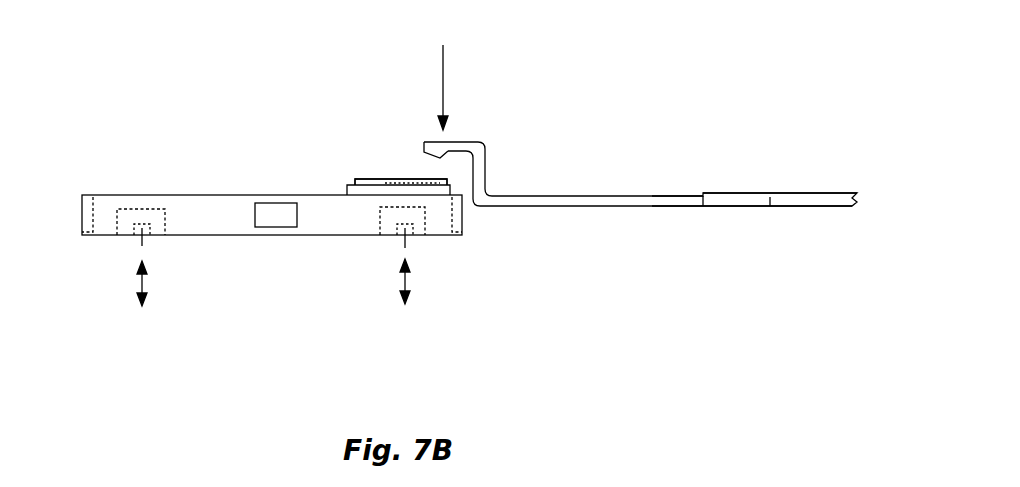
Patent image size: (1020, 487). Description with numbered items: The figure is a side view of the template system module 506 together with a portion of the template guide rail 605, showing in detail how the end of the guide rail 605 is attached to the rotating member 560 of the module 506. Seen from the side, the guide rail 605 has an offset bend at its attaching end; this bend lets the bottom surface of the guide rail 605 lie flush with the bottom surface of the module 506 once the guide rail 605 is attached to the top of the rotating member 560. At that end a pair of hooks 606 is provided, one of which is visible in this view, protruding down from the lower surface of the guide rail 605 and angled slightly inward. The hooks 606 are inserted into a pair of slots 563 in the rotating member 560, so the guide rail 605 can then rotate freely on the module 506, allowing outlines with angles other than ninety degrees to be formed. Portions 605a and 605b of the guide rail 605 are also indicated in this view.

The template system module 506 is at (185, 157).
The rotating member 560 is at (347, 190).
The slots 563 is at (428, 178).
The hooks 606 is at (468, 143).
The template guide rail 605 is at (687, 196).
The first tape portion 605a is at (652, 196).
The second tape portion 605b is at (815, 193).